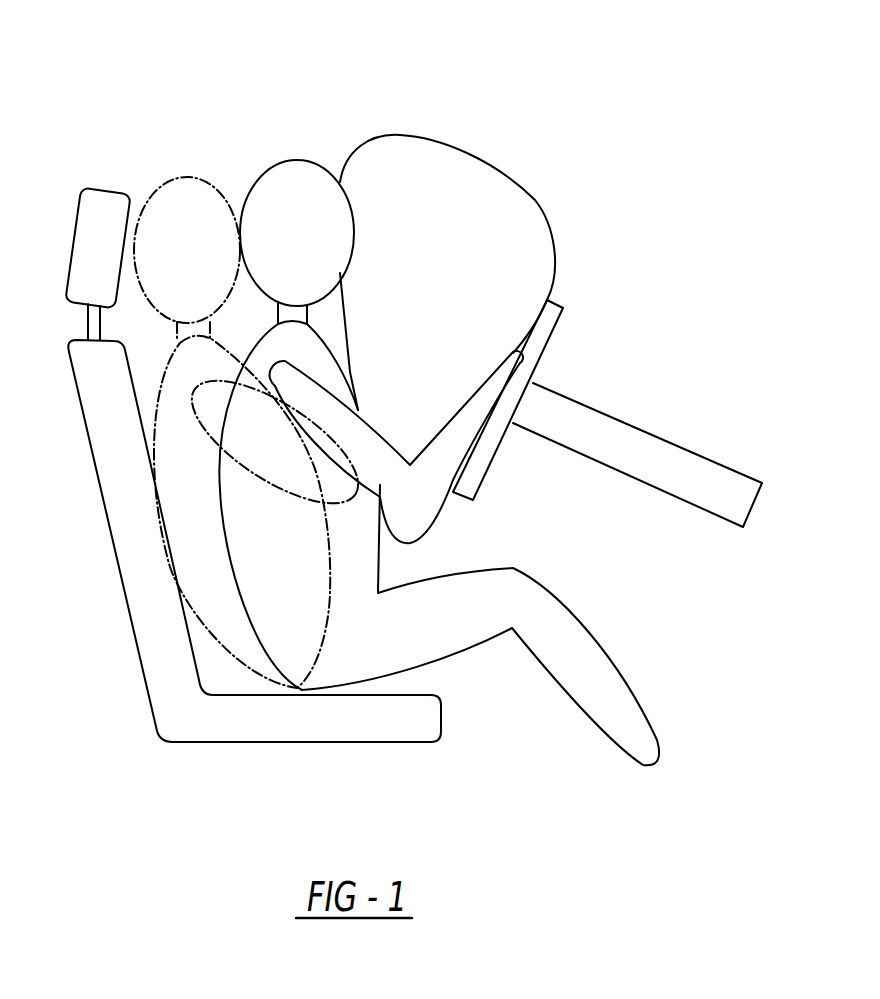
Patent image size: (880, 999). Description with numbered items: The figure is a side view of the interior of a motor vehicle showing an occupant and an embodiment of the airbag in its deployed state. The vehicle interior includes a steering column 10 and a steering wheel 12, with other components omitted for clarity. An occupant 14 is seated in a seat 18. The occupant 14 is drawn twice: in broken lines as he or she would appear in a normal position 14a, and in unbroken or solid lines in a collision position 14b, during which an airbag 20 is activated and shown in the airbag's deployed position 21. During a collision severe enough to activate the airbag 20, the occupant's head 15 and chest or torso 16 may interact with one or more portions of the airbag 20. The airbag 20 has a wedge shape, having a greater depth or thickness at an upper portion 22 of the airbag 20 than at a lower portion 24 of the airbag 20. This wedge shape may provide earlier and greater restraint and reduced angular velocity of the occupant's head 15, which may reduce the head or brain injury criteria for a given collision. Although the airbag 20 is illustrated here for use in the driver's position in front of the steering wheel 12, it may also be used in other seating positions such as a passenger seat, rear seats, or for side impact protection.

The steering column 10 is at (637, 450).
The steering wheel 12 is at (545, 323).
The occupant 14 is at (343, 418).
The normal position 14a is at (180, 498).
The collision position 14b is at (439, 433).
The head 15 is at (290, 182).
The chest or torso 16 is at (350, 548).
The seat 18 is at (203, 725).
The airbag 20 is at (526, 230).
The deployed position 21 is at (582, 236).
The upper portion 22 is at (526, 263).
The lower portion 24 is at (445, 518).